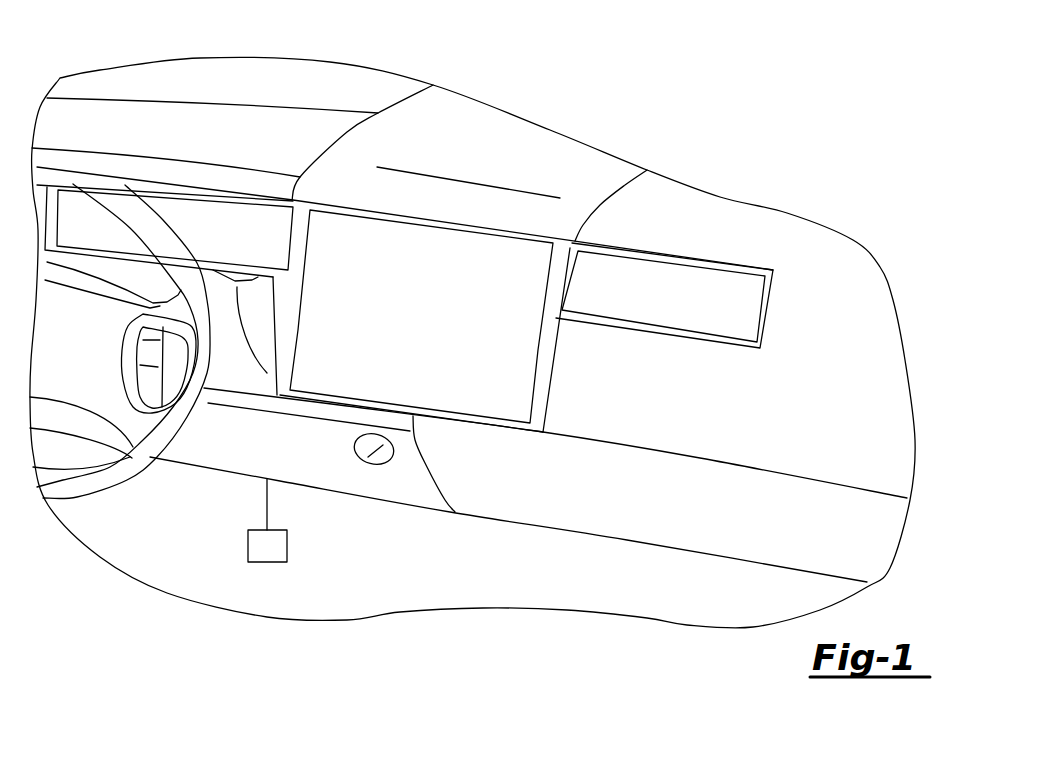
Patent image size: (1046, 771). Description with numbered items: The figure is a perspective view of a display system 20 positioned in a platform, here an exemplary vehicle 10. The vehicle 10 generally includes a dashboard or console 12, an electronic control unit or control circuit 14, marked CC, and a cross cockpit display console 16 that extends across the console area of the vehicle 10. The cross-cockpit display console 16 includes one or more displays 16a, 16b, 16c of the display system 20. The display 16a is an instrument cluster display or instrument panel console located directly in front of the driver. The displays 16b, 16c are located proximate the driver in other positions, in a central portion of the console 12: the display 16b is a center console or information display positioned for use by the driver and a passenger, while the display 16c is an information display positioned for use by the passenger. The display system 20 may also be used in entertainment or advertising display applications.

The vehicle 10 is at (702, 146).
The dashboard or console 12 is at (200, 54).
The electronic control unit or control circuit (CC) 14 is at (287, 547).
The cross cockpit display console 16 is at (484, 262).
The display 16a is at (241, 245).
The display 16b is at (438, 284).
The display 16c is at (681, 308).
The display system 20 is at (481, 378).